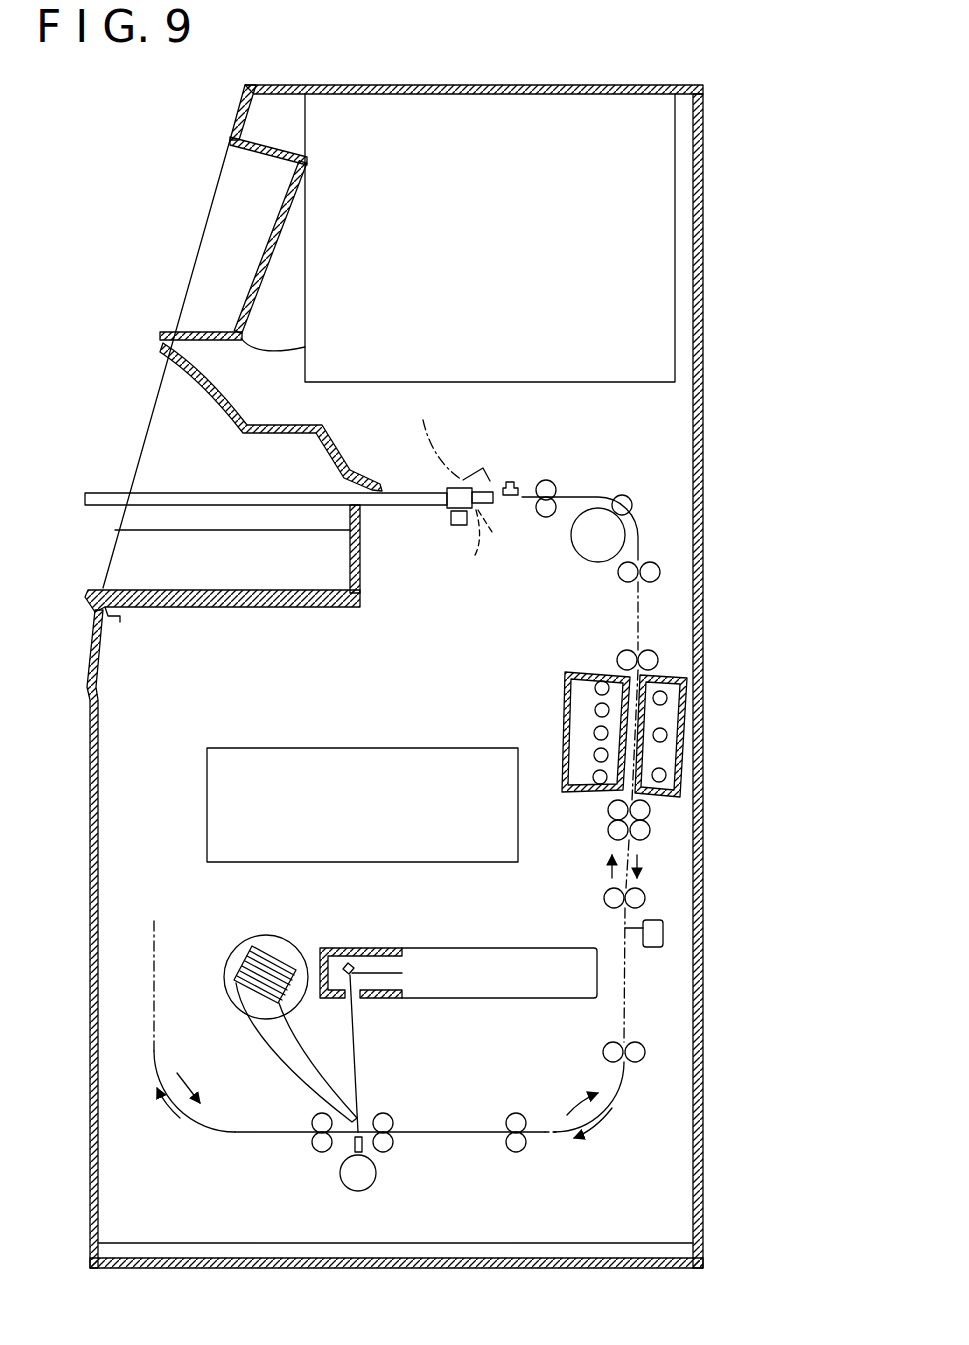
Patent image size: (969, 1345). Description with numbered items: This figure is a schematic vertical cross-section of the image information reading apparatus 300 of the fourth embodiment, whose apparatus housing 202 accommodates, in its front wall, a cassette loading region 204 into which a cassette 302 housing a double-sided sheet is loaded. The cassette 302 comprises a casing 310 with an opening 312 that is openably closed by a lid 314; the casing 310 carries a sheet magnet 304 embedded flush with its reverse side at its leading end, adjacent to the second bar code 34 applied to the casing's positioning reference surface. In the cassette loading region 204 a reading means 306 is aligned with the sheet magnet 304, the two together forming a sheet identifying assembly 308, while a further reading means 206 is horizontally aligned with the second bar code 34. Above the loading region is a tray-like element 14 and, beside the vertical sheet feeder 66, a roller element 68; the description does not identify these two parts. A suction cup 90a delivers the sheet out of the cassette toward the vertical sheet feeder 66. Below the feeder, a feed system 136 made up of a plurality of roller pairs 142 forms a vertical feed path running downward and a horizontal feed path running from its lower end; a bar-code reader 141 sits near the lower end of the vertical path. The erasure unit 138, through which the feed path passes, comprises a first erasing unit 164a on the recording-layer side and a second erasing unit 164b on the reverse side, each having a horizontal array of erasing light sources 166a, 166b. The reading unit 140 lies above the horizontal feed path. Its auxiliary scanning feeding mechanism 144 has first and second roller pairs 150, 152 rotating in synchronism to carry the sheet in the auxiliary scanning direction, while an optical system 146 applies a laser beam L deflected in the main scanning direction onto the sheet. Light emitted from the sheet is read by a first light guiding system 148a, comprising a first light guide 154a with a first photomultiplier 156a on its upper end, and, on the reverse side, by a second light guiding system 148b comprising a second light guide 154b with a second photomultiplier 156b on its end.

The image information reading apparatus 300 is at (640, 42).
The apparatus housing 202 is at (707, 192).
The paper feed tray 14 is at (272, 242).
The cassette 302 is at (203, 486).
The sheet identifying assembly 308 is at (432, 478).
The lid 314 is at (433, 438).
The opening 312 is at (490, 485).
The vertical sheet feeder 66 is at (574, 438).
The feed rollers 68 is at (568, 477).
The suction cup 90a is at (512, 497).
The reading means 206 is at (446, 505).
The reading means 306 is at (452, 513).
The second bar code 34 is at (501, 535).
The sheet magnet 304 is at (485, 551).
The casing 310 is at (372, 508).
The cassette loading region 204 is at (410, 577).
The roller pairs 142 is at (622, 653).
The feed system 136 is at (667, 658).
The erasure unit 138 is at (765, 749).
The first erasing unit 164a is at (565, 671).
The second erasing unit 164b is at (684, 768).
The erasing light sources 166a is at (592, 710).
The erasing light sources 166b is at (672, 698).
The bar-code reader 141 is at (663, 927).
The reading unit 140 is at (410, 899).
The optical system 146 is at (479, 946).
The laser beam L is at (356, 1033).
The first photomultiplier 156a is at (277, 943).
The first light guiding system 148a is at (238, 1041).
The first light guide 154a is at (292, 1070).
The auxiliary scanning feeding mechanism 144 is at (386, 1080).
The second roller pair 152 is at (312, 1115).
The first roller pair 150 is at (390, 1113).
The second light guide 154b is at (352, 1148).
The second light guiding system 148b is at (386, 1167).
The second photomultiplier 156b is at (368, 1180).